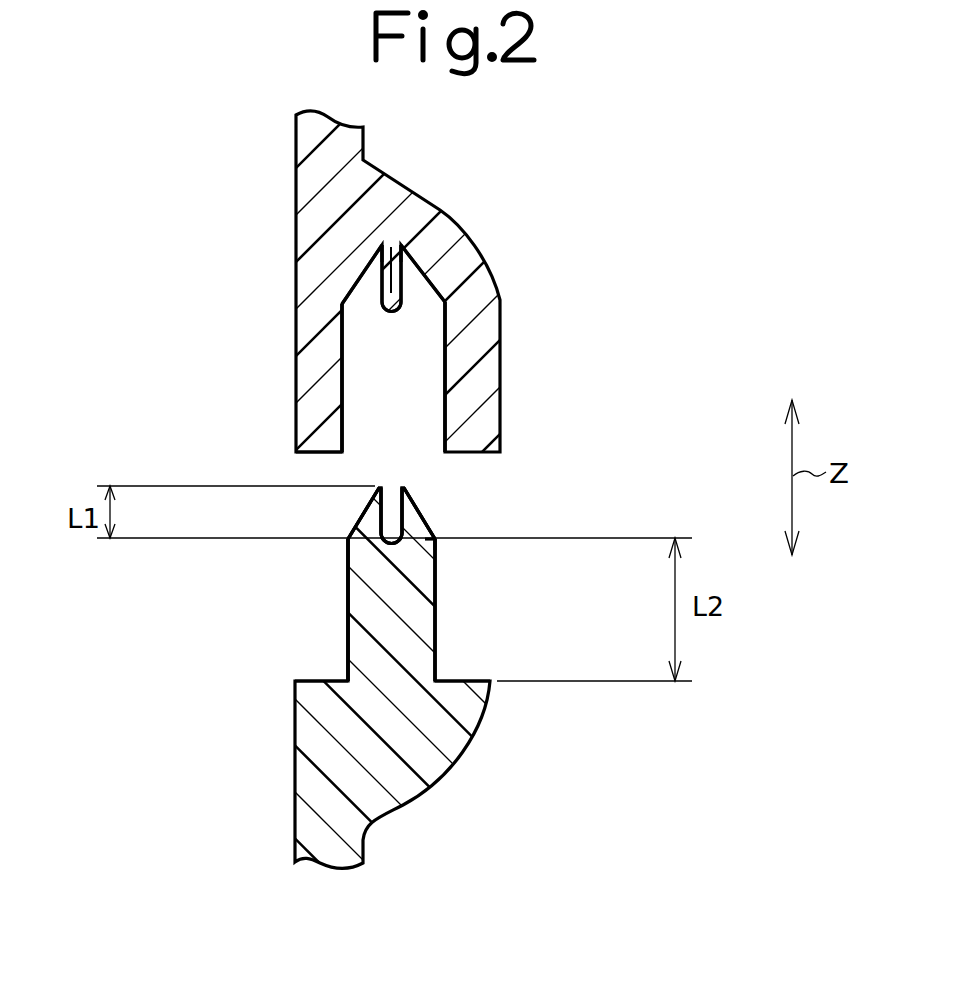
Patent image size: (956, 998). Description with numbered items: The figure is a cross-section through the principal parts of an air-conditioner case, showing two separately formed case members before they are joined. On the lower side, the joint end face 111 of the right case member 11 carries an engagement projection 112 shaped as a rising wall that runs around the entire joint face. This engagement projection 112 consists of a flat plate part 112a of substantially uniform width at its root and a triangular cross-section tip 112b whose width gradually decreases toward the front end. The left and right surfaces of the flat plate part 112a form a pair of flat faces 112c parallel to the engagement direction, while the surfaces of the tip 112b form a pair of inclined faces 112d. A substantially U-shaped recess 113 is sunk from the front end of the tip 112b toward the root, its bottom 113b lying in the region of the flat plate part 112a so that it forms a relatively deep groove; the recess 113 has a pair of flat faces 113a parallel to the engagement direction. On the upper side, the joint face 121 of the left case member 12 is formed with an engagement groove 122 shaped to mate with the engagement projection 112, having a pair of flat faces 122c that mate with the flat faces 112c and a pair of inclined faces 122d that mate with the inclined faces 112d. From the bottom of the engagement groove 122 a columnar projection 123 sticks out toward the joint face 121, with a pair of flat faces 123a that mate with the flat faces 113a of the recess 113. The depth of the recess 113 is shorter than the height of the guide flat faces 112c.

The right case member 11 is at (345, 841).
The joint end face 111 is at (316, 683).
The engagement projection 112 is at (436, 640).
The flat plate part 112a is at (349, 634).
The tip 112b is at (377, 532).
The flat faces 112c is at (349, 587).
The inclined faces 112d is at (378, 522).
The recess 113 is at (394, 507).
The flat faces 113a is at (357, 531).
The bottom 113b is at (436, 540).
The left case member 12 is at (333, 145).
The joint face 121 is at (328, 453).
The engagement groove 122 is at (447, 370).
The flat faces 122c is at (343, 366).
The inclined faces 122d is at (343, 301).
The projection 123 is at (402, 298).
The flat faces 123a is at (380, 276).